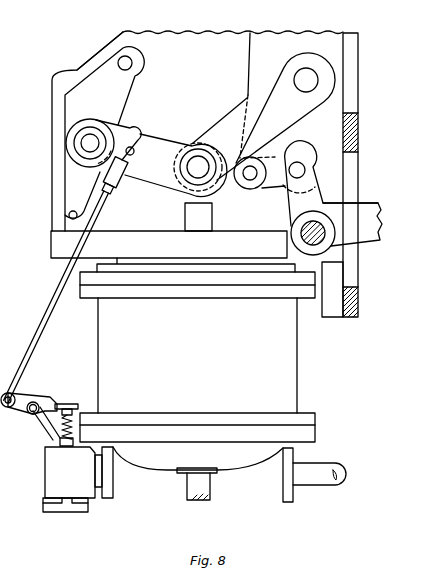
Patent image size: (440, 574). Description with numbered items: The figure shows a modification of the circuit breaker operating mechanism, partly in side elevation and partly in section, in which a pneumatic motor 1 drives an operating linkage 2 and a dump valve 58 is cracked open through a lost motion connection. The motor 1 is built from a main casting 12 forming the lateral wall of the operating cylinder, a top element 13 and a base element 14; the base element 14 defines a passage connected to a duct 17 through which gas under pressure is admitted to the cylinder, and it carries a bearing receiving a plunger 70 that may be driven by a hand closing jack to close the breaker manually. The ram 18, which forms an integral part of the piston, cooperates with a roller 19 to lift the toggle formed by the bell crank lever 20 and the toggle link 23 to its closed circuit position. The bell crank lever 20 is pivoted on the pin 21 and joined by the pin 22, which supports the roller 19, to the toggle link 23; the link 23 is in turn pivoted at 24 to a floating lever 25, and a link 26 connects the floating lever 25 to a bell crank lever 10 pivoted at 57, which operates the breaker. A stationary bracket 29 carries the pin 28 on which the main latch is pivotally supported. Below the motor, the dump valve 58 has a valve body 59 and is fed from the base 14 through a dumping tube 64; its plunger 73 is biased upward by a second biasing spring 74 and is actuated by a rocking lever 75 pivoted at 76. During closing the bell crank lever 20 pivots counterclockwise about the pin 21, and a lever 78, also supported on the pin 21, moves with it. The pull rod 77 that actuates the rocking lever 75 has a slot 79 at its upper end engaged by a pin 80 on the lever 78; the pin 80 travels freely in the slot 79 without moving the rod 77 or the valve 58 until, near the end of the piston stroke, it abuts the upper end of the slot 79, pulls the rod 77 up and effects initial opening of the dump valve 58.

The motor 1 is at (82, 348).
The linkage 2 is at (204, 21).
The bell crank lever 10 is at (365, 240).
The main casting 12 is at (297, 367).
The top element 13 is at (258, 285).
The base element 14 is at (230, 465).
The duct 17 is at (318, 478).
The ram or plunger 18 is at (184, 211).
The roller 19 is at (216, 184).
The bell crank lever 20 is at (67, 187).
The pin 21 is at (80, 143).
The pin 22 is at (203, 161).
The toggle link 23 is at (236, 113).
The pivot 24 is at (309, 87).
The floating lever 25 is at (250, 62).
The link 26 is at (273, 185).
The pin 28 is at (132, 62).
The stationary bracket 29 is at (105, 70).
The pivot 57 is at (326, 231).
The dump valve 58 is at (44, 467).
The valve body 59 is at (55, 490).
The dumping tube 64 is at (97, 480).
The plunger 70 is at (187, 500).
The plunger 73 is at (75, 412).
The second biasing spring 74 is at (48, 436).
The rocking lever 75 is at (48, 403).
The pivot 76 is at (27, 410).
The pull rod 77 is at (57, 302).
The lever 78 is at (114, 134).
The slot 79 is at (144, 131).
The pin 80 is at (134, 154).